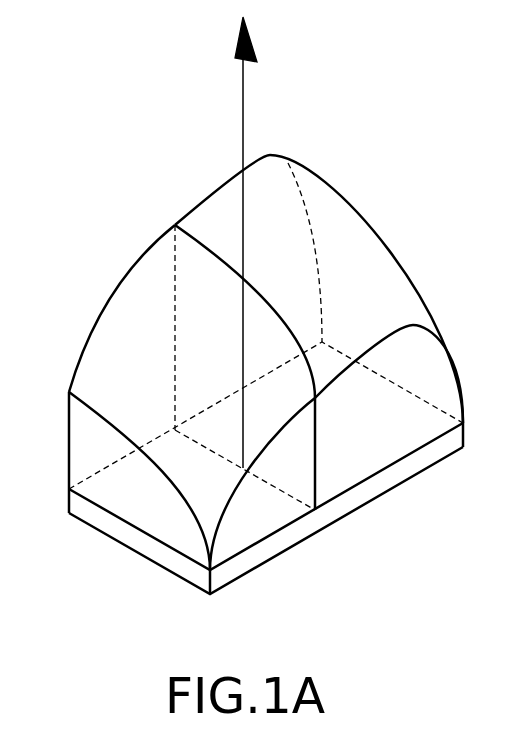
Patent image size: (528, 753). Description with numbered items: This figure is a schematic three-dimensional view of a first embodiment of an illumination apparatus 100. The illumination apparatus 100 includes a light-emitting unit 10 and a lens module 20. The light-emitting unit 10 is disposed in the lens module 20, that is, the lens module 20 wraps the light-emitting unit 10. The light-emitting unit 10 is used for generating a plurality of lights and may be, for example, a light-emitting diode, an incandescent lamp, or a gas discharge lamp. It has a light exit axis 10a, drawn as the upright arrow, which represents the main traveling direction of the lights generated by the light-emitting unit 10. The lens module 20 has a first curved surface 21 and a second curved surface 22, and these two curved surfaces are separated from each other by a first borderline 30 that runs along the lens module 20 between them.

The illumination apparatus 100 is at (82, 168).
The light-emitting unit 10 is at (349, 503).
The light exit axis 10a is at (243, 85).
The lens module 20 is at (333, 181).
The first curved surface 21 is at (363, 277).
The second curved surface 22 is at (138, 348).
The first borderline 30 is at (330, 433).